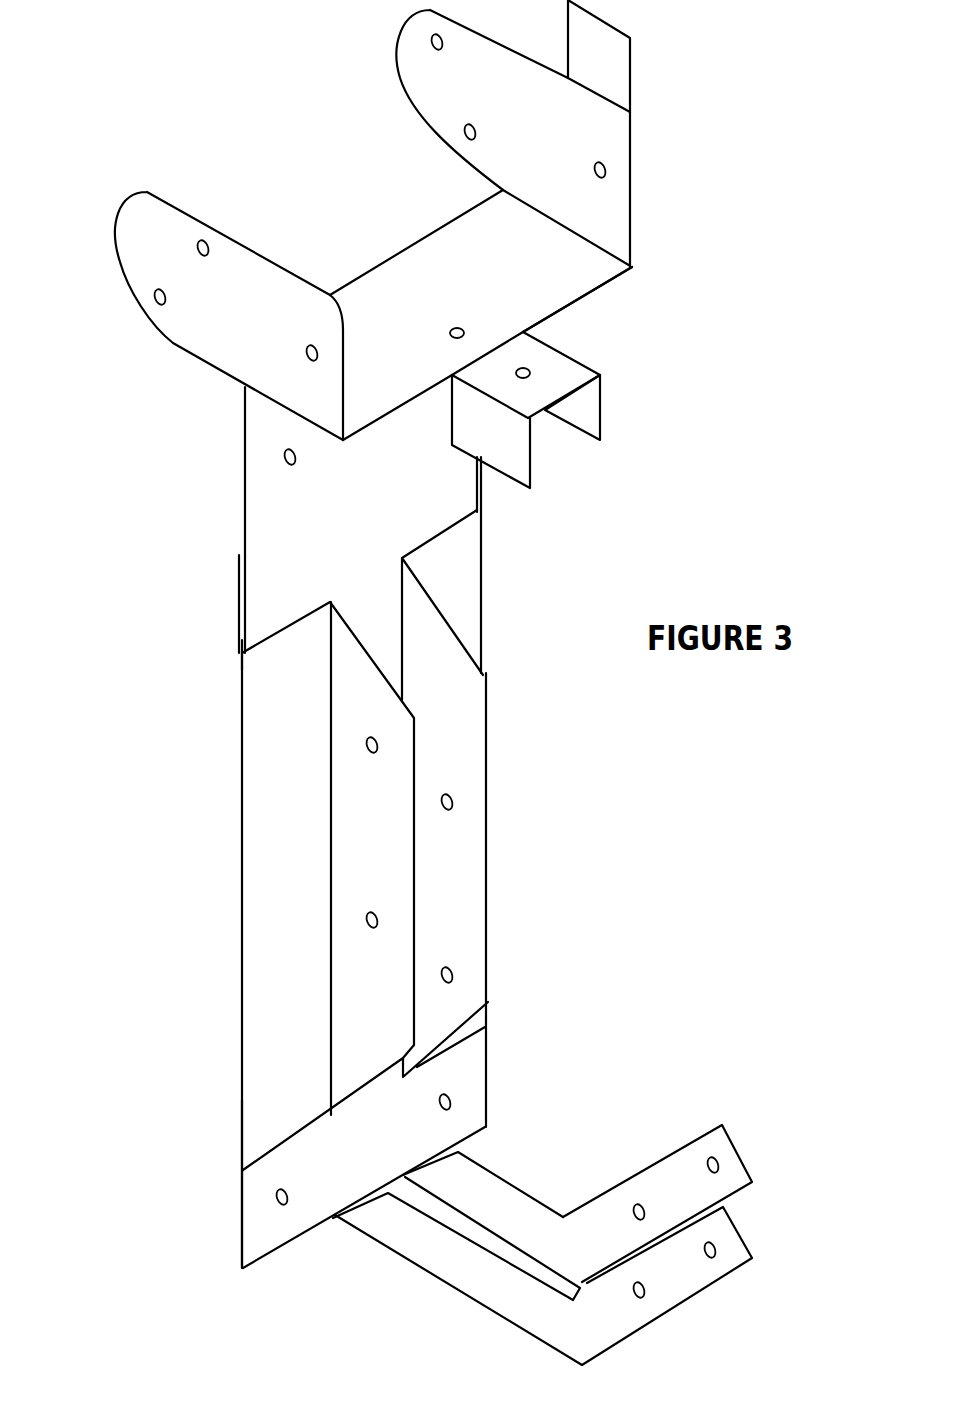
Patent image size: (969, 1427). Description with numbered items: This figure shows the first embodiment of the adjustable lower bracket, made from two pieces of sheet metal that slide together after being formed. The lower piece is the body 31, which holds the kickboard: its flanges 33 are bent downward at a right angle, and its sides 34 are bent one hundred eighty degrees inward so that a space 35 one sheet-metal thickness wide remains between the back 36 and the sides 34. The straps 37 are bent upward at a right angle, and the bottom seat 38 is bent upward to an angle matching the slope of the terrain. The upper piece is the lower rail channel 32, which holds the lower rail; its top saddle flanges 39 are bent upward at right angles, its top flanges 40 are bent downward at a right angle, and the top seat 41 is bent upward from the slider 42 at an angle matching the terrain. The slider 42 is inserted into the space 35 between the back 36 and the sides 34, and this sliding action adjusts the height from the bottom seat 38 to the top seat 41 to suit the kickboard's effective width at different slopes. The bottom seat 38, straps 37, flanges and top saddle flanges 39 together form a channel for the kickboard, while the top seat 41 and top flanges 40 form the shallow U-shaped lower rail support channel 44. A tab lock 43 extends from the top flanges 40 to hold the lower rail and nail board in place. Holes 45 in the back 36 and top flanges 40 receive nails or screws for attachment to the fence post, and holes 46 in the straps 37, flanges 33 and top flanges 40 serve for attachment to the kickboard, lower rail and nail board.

The body 31 is at (520, 839).
The lower rail channel 32 is at (692, 271).
The flanges 33 is at (480, 752).
The sides 34 is at (468, 588).
The space 35 is at (473, 512).
The back 36 is at (237, 582).
The straps 37 is at (733, 1165).
The bottom seat 38 is at (447, 1215).
The top saddle flanges 39 is at (605, 420).
The top flanges 40 is at (623, 193).
The top seat 41 is at (570, 290).
The slider 42 is at (257, 477).
The tab lock 43 is at (617, 53).
The lower rail support channel 44 is at (411, 225).
The holes 45 is at (460, 127).
The holes 46 is at (378, 918).